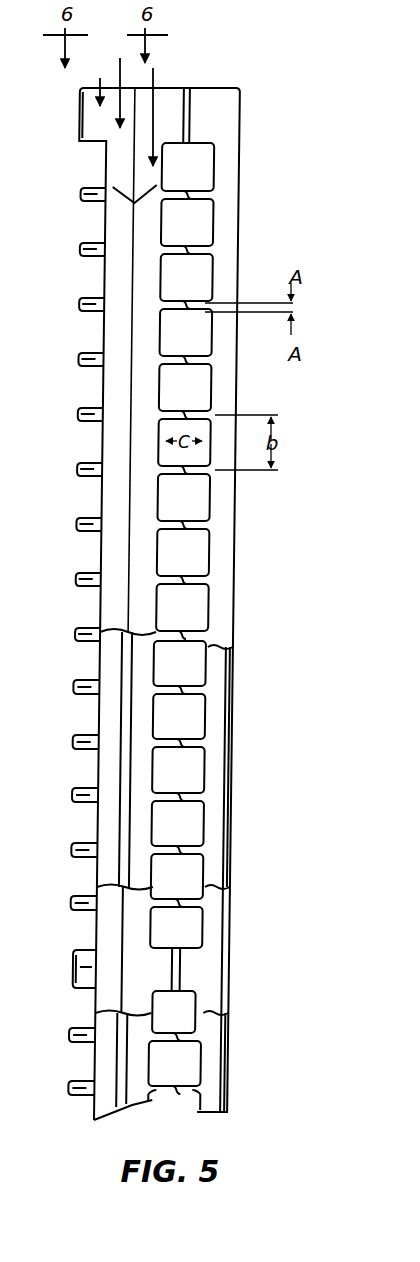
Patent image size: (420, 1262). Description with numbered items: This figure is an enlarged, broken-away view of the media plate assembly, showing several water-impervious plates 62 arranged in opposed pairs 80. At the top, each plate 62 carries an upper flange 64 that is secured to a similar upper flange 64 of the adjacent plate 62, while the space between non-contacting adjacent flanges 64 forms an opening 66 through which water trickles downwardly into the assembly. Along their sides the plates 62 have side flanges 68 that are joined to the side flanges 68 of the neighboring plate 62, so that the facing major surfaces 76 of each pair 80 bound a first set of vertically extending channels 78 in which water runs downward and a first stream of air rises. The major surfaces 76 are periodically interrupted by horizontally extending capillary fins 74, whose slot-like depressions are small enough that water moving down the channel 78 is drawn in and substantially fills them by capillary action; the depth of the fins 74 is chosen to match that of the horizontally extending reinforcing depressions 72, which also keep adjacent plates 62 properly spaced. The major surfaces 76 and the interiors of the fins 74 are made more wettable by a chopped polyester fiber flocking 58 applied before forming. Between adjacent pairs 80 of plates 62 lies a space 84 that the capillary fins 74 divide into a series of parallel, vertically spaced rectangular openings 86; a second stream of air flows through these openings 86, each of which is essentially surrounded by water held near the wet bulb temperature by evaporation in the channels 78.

The flocking 58 is at (220, 108).
The plate 62 is at (147, 339).
The upper flange 64 is at (192, 106).
The opening 66 is at (99, 79).
The side flange 68 is at (122, 660).
The horizontally extending depression 72 is at (165, 955).
The capillary fin 74 is at (80, 188).
The major surface 76 is at (157, 388).
The vertically extending channel 78 is at (118, 495).
The pair of plates 80 is at (135, 545).
The space 84 is at (200, 235).
The rectangular opening 86 is at (204, 167).